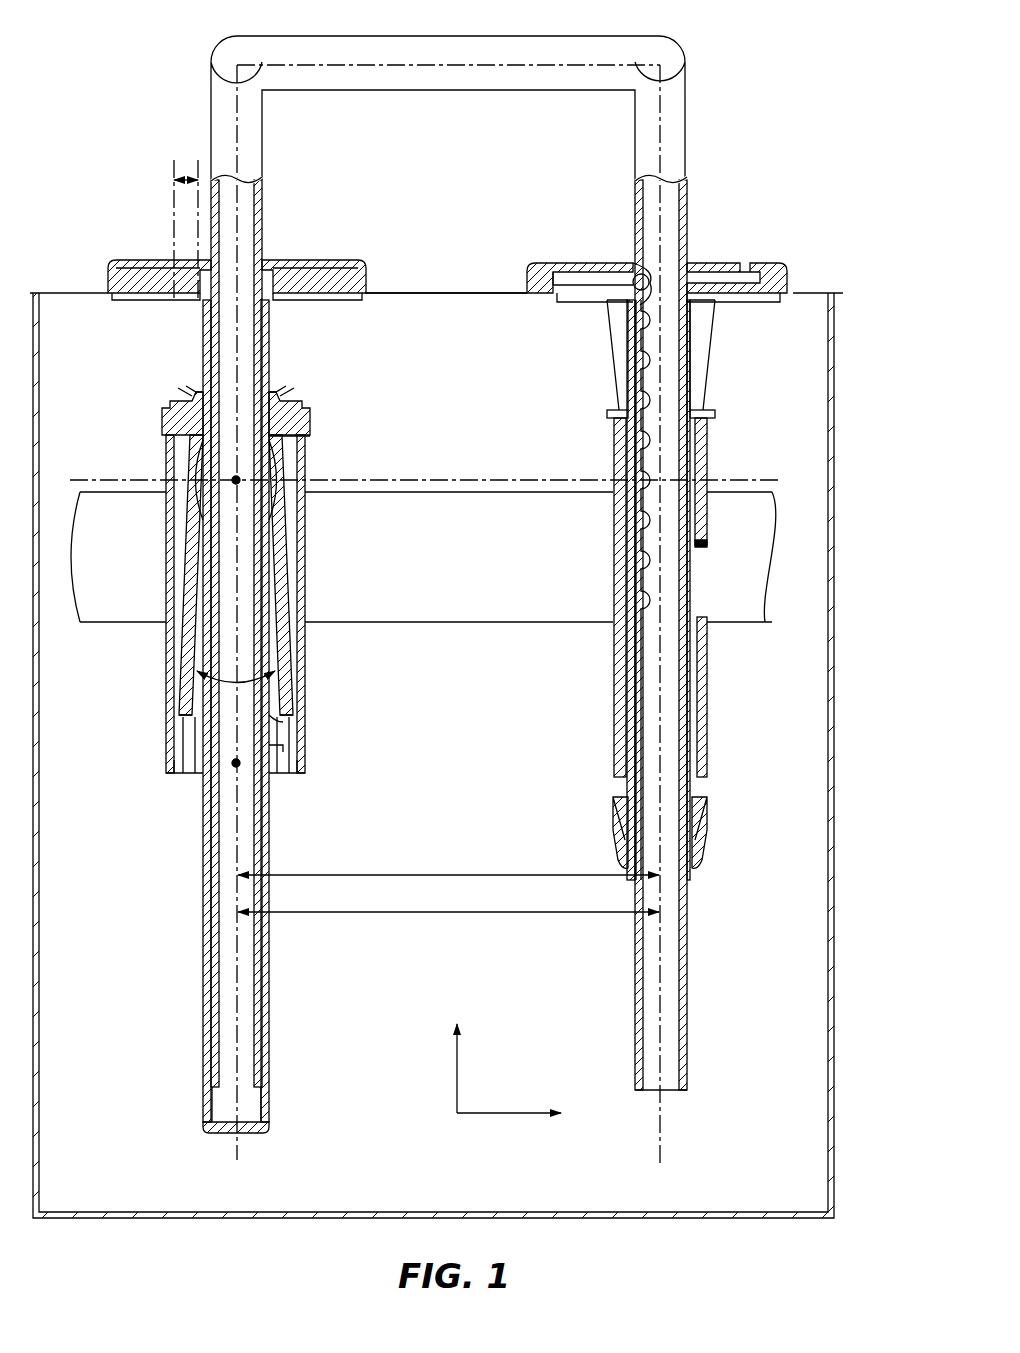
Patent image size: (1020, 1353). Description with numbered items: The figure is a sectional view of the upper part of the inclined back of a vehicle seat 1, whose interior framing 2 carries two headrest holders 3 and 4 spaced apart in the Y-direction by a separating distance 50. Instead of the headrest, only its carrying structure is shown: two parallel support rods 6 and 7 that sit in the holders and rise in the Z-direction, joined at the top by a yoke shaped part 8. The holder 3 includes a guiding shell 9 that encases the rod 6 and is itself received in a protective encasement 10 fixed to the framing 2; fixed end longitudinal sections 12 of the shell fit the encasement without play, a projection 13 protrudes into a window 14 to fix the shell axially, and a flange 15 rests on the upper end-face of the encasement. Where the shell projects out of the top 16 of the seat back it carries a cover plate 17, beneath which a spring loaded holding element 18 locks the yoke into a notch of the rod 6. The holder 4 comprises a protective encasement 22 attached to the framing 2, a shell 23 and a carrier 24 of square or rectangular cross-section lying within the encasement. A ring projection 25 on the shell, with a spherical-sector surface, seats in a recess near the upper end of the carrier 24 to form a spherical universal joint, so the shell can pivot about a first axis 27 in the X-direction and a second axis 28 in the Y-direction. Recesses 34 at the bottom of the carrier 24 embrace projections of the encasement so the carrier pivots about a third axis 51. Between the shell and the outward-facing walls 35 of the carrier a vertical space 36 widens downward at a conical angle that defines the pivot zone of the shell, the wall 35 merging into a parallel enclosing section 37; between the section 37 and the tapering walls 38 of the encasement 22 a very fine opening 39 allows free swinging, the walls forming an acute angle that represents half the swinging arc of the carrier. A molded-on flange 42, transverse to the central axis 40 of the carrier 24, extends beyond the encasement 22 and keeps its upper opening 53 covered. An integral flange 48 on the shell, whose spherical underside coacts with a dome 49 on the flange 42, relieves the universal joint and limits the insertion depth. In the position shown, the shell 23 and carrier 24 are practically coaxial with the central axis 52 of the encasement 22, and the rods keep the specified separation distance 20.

The vehicle seat 1 is at (805, 318).
The interior framing 2 is at (473, 605).
The holder 3 is at (664, 590).
The holder 4 is at (243, 589).
The support rod 6 is at (678, 945).
The support rod 7 is at (255, 970).
The yoke shaped part 8 is at (458, 50).
The guiding shell 9 is at (625, 562).
The protective encasement 10 is at (700, 718).
The fixed end longitudinal sections 12 is at (615, 420).
The projection 13 is at (700, 545).
The window 14 is at (710, 595).
The flange 15 is at (612, 405).
The top of the seat back 16 is at (400, 290).
The cover plate 17 is at (300, 263).
The holding element 18 is at (618, 282).
The specified separation distance 20 is at (438, 915).
The protective encasement 22 is at (253, 604).
The shell 23 is at (265, 840).
The carrier 24 is at (278, 553).
The ring projection 25 is at (270, 473).
The first axis 27 is at (236, 480).
The second axis 28 is at (132, 477).
The recesses 34 is at (284, 748).
The walls 35 is at (285, 590).
The vertical space 36 is at (284, 722).
The enclosing section 37 is at (183, 775).
The walls 38 is at (170, 512).
The opening 39 is at (180, 758).
The central axis 40 is at (235, 1023).
The flange 42 is at (290, 428).
The flange 48 is at (267, 400).
The dome 49 is at (160, 425).
The separating distance 50 is at (525, 878).
The third axis 51 is at (236, 763).
The central axis 52 is at (662, 1010).
The upper opening 53 is at (300, 440).